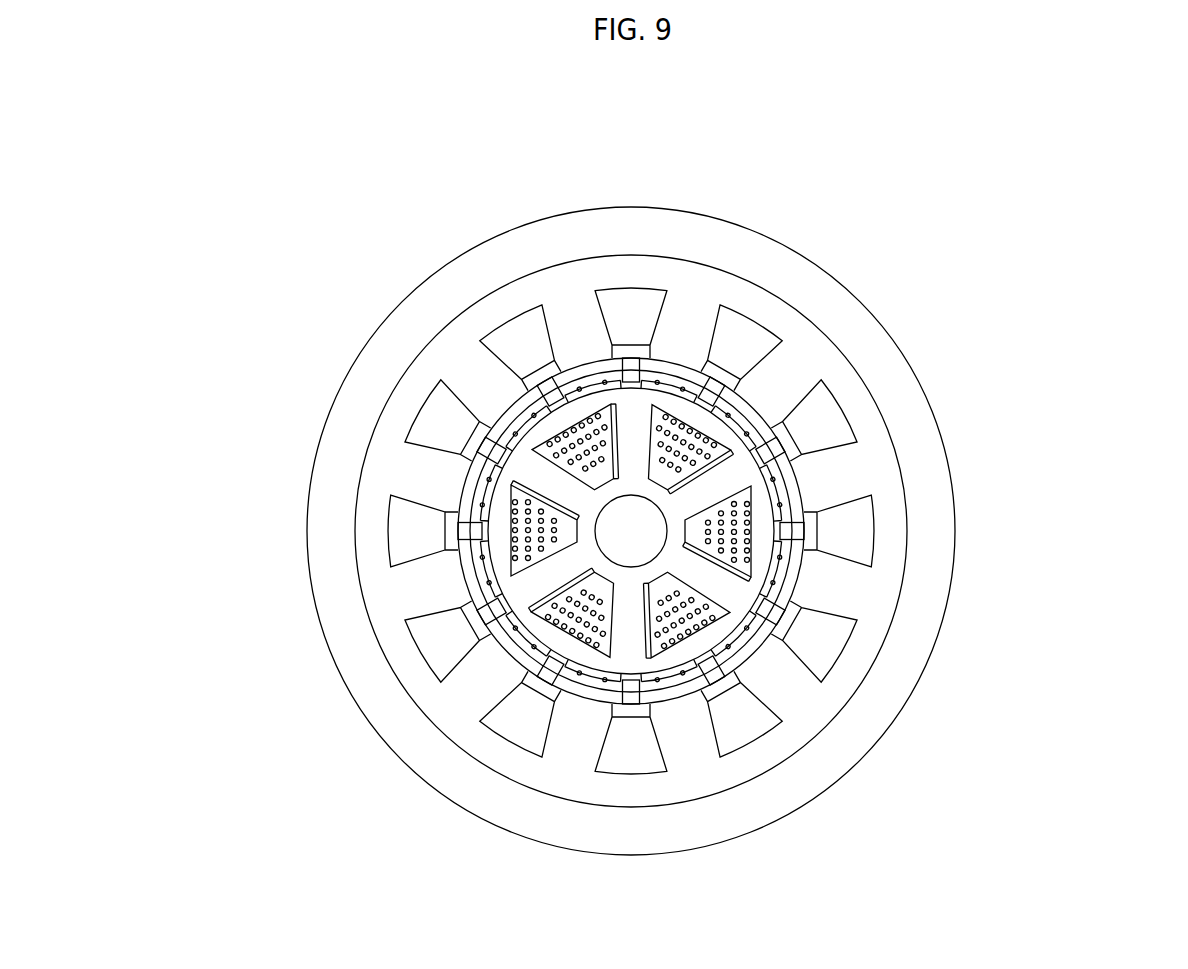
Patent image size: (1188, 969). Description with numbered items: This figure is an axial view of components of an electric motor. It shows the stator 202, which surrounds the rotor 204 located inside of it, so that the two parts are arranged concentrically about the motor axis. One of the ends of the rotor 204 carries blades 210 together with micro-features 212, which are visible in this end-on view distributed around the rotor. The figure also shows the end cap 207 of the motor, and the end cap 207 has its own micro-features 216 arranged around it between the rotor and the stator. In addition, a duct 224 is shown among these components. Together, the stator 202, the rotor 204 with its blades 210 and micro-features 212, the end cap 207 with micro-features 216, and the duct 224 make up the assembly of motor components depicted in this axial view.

The stator 202 is at (382, 588).
The rotor 204 is at (633, 655).
The end cap 207 is at (793, 273).
The blades 210 is at (653, 613).
The micro-features 212 is at (723, 528).
The micro-features 216 is at (720, 419).
The duct 224 is at (768, 449).